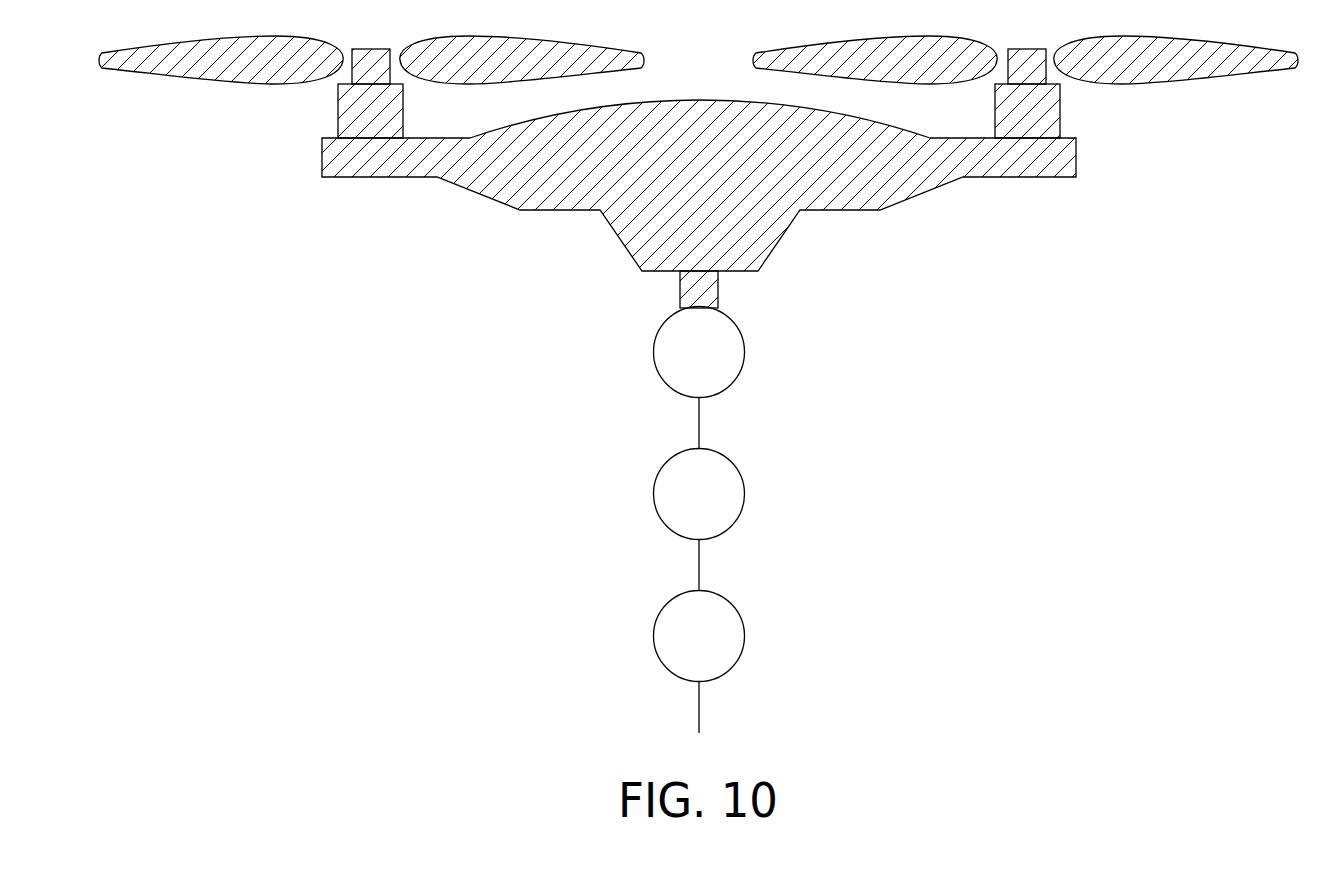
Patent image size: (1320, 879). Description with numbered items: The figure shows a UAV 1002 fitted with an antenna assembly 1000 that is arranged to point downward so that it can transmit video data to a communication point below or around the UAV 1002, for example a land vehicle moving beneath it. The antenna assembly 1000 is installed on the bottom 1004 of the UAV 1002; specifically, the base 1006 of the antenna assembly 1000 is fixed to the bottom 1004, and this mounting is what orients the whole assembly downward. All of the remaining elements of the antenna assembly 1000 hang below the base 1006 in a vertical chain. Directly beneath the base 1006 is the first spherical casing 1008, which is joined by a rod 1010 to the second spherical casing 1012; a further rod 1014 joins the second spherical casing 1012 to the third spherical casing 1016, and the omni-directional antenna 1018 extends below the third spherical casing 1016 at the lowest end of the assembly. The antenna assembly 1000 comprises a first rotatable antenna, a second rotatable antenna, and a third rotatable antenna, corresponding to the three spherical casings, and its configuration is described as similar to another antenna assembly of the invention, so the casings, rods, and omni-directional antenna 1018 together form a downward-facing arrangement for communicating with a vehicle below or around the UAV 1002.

The antenna assembly 1000 is at (698, 379).
The UAV 1002 is at (699, 100).
The bottom 1004 is at (741, 289).
The base 1006 is at (680, 288).
The first spherical casing 1008 is at (745, 352).
The rod 1010 is at (699, 422).
The second spherical casing 1012 is at (745, 493).
The rod 1014 is at (699, 565).
The third spherical casing 1016 is at (745, 635).
The omni-directional antenna 1018 is at (699, 707).